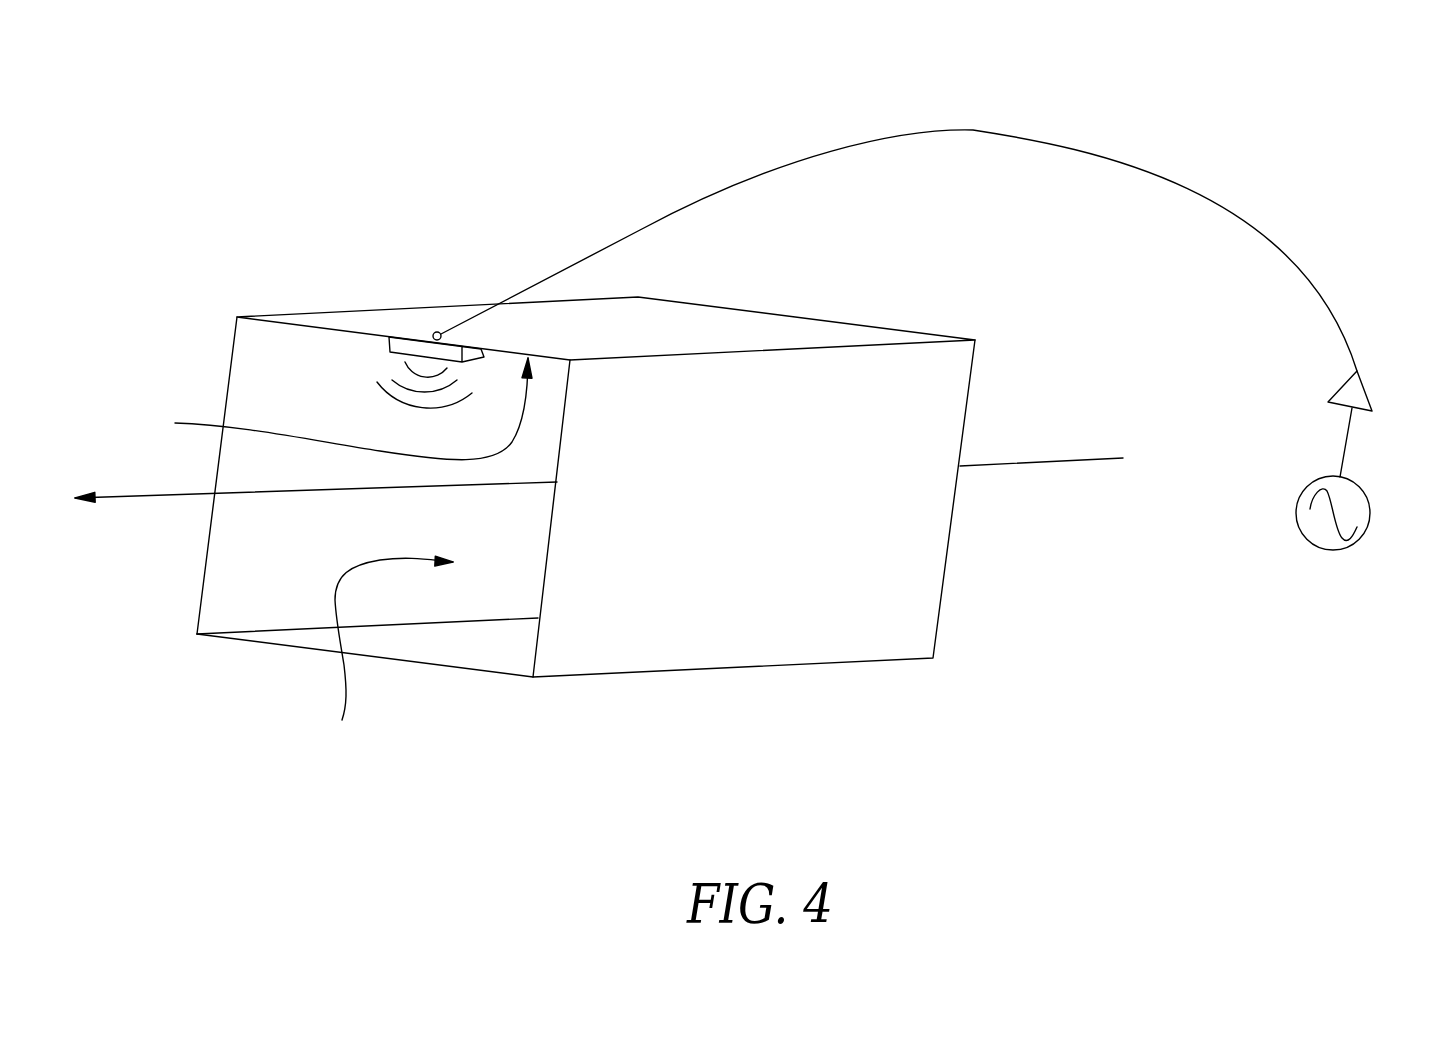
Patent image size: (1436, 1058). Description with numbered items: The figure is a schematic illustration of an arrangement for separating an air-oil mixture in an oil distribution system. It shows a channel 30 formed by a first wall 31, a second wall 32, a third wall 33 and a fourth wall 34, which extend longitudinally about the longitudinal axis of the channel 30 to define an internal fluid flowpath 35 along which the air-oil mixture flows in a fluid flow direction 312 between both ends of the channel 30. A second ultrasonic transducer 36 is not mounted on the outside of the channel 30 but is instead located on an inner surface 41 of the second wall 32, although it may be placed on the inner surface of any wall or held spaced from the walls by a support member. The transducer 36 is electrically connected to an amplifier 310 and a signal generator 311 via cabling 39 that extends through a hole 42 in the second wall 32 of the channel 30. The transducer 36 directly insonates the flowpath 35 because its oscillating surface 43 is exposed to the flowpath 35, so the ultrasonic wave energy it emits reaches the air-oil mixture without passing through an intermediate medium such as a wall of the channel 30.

The channel 30 is at (507, 255).
The first wall 31 is at (735, 618).
The second wall 32 is at (858, 337).
The third wall 33 is at (234, 341).
The fourth wall 34 is at (447, 670).
The internal fluid flowpath 35 is at (387, 654).
The second ultrasonic transducer 36 is at (413, 350).
The cabling 39 is at (1160, 175).
The inner surface 41 is at (339, 409).
The hole 42 is at (437, 332).
The oscillating surface 43 is at (392, 354).
The amplifier 310 is at (1365, 389).
The signal generator 311 is at (1322, 550).
The fluid flow direction 312 is at (132, 495).